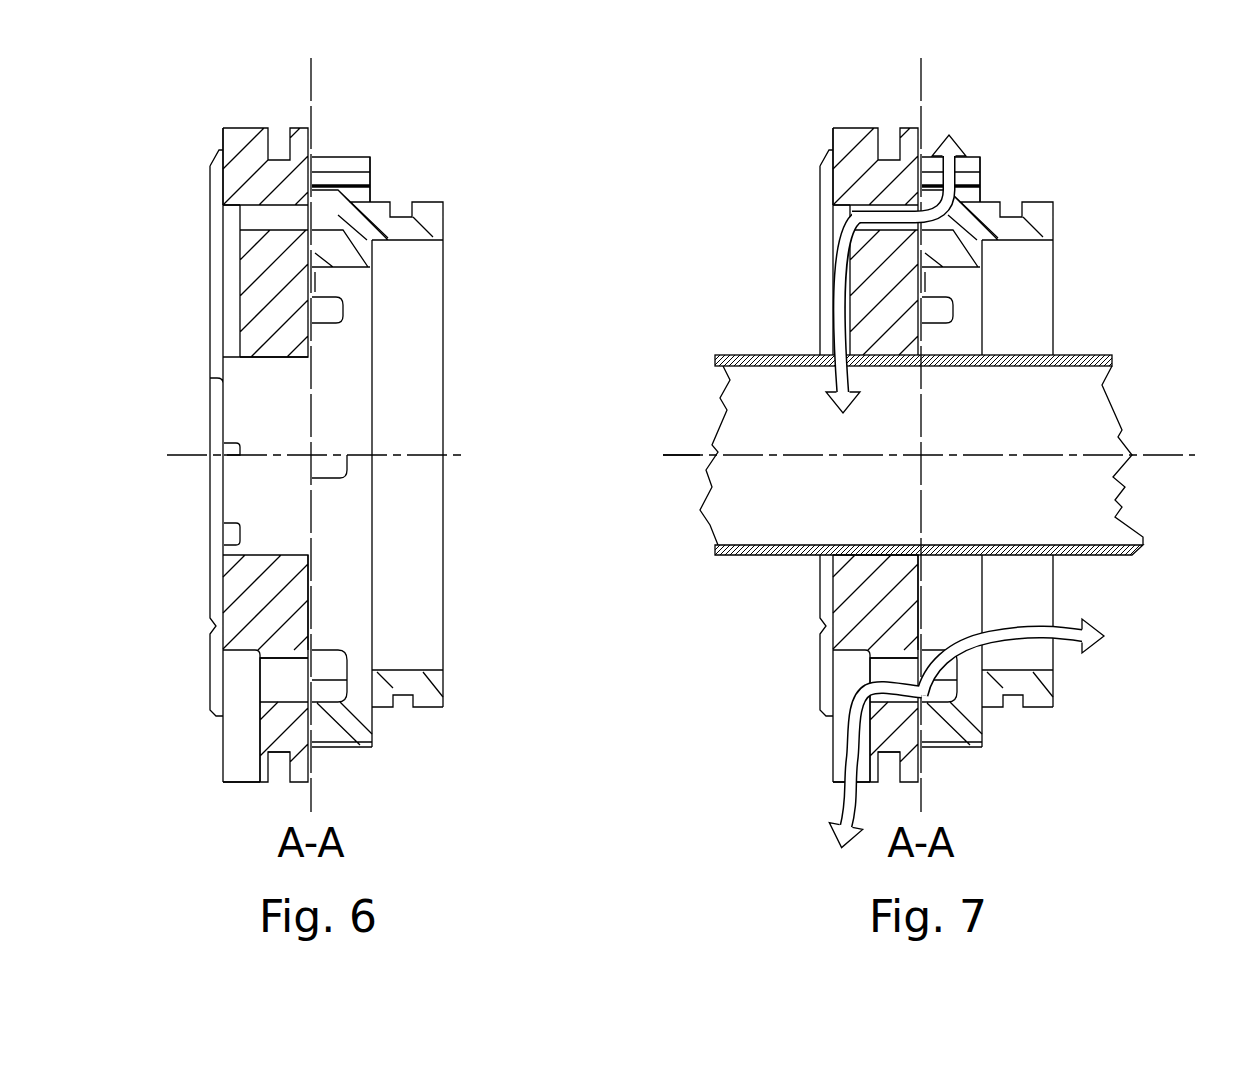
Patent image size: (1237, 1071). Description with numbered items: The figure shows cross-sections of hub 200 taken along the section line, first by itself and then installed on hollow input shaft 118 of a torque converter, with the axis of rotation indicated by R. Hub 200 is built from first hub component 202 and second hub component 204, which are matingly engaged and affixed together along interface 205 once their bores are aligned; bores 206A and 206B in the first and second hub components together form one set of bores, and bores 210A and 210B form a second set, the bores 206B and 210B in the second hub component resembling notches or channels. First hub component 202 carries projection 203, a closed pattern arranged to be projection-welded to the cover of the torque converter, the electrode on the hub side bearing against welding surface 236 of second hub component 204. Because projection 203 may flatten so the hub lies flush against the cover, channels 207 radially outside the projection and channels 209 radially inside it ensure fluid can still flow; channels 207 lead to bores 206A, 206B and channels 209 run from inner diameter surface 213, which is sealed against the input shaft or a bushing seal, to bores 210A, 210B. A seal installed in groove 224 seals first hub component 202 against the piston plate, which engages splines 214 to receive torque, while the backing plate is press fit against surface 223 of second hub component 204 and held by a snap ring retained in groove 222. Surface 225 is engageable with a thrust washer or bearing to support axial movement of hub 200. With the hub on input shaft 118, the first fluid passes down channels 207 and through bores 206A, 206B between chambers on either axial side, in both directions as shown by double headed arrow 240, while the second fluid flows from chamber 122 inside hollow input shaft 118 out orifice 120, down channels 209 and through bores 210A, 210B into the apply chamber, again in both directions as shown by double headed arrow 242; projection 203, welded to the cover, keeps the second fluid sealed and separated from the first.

In FIG. 6, the hub 200 is at (113, 119).
In FIG. 7, the hub 200 is at (717, 119).
In FIG. 6, the first hub component 202 is at (247, 132).
In FIG. 7, the first hub component 202 is at (857, 132).
In FIG. 6, the projection 203 is at (225, 142).
In FIG. 7, the projection 203 is at (835, 142).
In FIG. 6, the second hub component 204 is at (412, 203).
In FIG. 7, the second hub component 204 is at (1022, 203).
In FIG. 6, the interface 205 is at (313, 112).
In FIG. 7, the interface 205 is at (923, 112).
In FIG. 6, the bore 206A is at (283, 690).
In FIG. 7, the bore 206A is at (893, 690).
In FIG. 6, the bore 206B is at (337, 708).
In FIG. 7, the bore 206B is at (947, 708).
In FIG. 6, the channels 207 is at (242, 763).
In FIG. 7, the channels 207 is at (852, 763).
In FIG. 6, the channels 209 is at (232, 257).
In FIG. 7, the channels 209 is at (845, 283).
In FIG. 6, the bore 210A is at (243, 150).
In FIG. 7, the bore 210A is at (853, 150).
In FIG. 6, the bore 210B is at (445, 240).
In FIG. 7, the bore 210B is at (1055, 240).
In FIG. 6, the surface 213 is at (303, 361).
In FIG. 6, the splines 214 is at (379, 194).
In FIG. 7, the splines 214 is at (989, 194).
In FIG. 6, the groove 222 is at (407, 707).
In FIG. 7, the groove 222 is at (1017, 707).
In FIG. 6, the surface 223 is at (370, 157).
In FIG. 7, the surface 223 is at (980, 157).
In FIG. 6, the groove 224 is at (275, 791).
In FIG. 7, the groove 224 is at (885, 791).
In FIG. 6, the surface 225 is at (318, 603).
In FIG. 7, the surface 225 is at (940, 590).
In FIG. 6, the welding surface 236 is at (378, 256).
In FIG. 7, the welding surface 236 is at (988, 256).
In FIG. 6, the axis of rotation R is at (183, 455).
In FIG. 7, the axis of rotation R is at (683, 455).
In FIG. 7, the hollow input shaft 118 is at (760, 355).
In FIG. 7, the orifice 120 is at (688, 453).
In FIG. 7, the chamber 122 is at (760, 500).
In FIG. 7, the double headed arrow 240 is at (1087, 652).
In FIG. 7, the double headed arrow 242 is at (1055, 400).